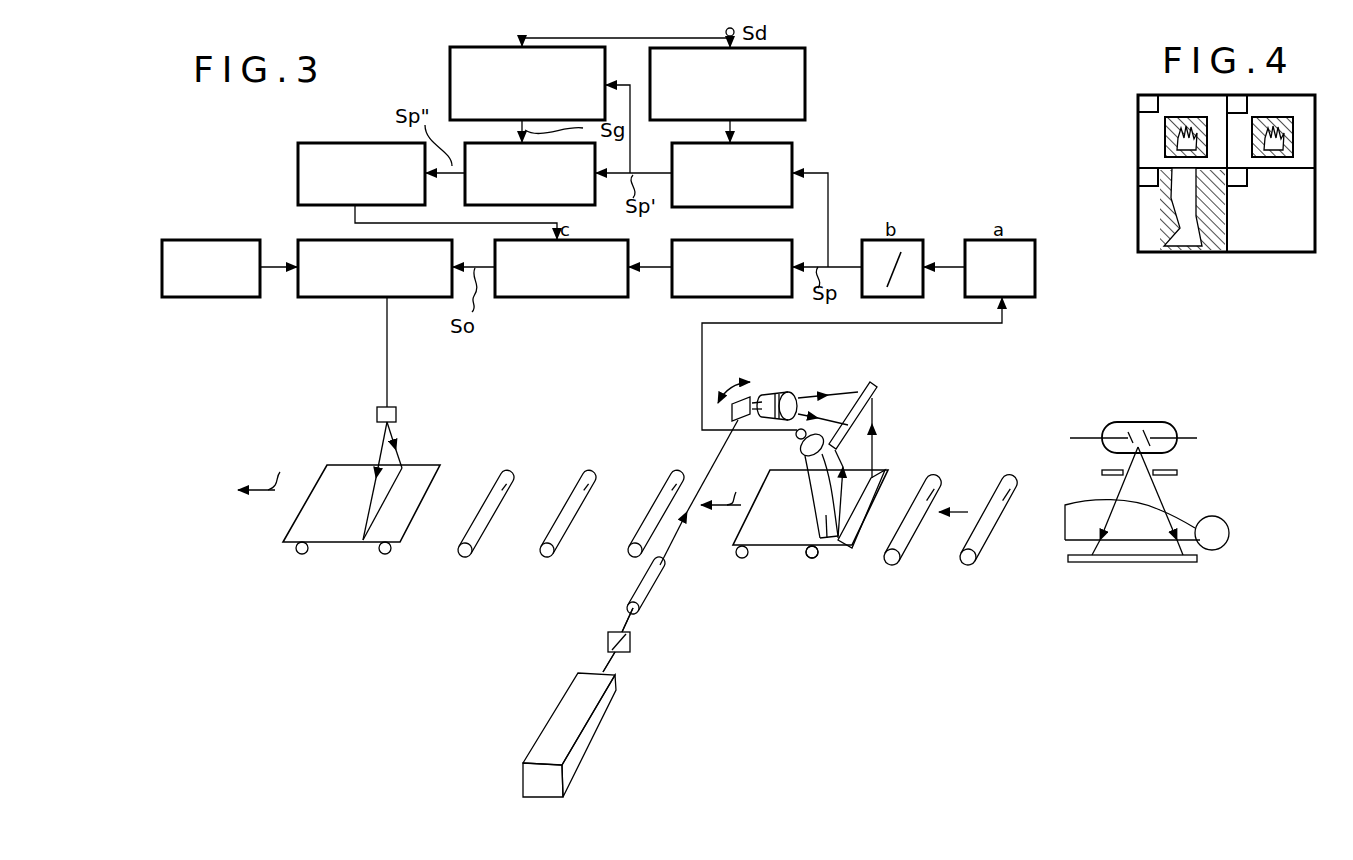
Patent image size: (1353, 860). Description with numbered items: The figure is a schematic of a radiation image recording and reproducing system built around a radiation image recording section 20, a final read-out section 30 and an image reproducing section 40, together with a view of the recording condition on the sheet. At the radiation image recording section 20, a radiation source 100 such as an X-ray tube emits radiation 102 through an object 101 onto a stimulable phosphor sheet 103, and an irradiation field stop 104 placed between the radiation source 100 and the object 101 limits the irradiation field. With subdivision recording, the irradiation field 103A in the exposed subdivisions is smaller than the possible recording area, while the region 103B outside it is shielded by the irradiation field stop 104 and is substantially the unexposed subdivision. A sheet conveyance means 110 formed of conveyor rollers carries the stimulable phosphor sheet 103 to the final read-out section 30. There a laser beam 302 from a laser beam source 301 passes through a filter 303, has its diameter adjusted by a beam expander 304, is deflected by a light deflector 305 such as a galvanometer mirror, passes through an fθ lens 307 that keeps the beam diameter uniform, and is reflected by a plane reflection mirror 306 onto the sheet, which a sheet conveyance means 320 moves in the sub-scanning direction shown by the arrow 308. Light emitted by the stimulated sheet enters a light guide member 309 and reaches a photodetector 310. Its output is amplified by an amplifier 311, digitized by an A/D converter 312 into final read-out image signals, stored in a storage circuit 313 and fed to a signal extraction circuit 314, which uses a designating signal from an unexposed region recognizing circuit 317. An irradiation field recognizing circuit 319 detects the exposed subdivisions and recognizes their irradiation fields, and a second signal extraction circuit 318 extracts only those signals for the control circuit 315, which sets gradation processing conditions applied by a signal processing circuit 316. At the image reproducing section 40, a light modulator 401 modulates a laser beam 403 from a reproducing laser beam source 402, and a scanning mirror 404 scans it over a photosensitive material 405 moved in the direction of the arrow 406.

In FIG. 3, the radiation image recording section 20 is at (1213, 568).
In FIG. 3, the final read-out section 30 is at (893, 563).
In FIG. 3, the image reproducing section 40 is at (398, 563).
In FIG. 3, the radiation source 100 is at (1140, 420).
In FIG. 3, the object 101 is at (1132, 522).
In FIG. 3, the radiation 102 is at (1115, 487).
In FIG. 3, the stimulable phosphor sheet 103 is at (883, 487).
In FIG. 4, the stimulable phosphor sheet 103 is at (1176, 173).
In FIG. 4, the irradiation field 103A is at (1165, 128).
In FIG. 4, the region outside of the irradiation field 103B is at (1143, 118).
In FIG. 3, the irradiation field stop 104 is at (1165, 472).
In FIG. 3, the sheet conveyance means 110 is at (975, 560).
In FIG. 3, the laser beam source 301 is at (590, 733).
In FIG. 3, the laser beam 302 is at (612, 660).
In FIG. 3, the filter 303 is at (630, 634).
In FIG. 3, the beam expander 304 is at (655, 593).
In FIG. 3, the light deflector 305 is at (757, 392).
In FIG. 3, the plane reflection mirror 306 is at (876, 392).
In FIG. 3, the fθ lens 307 is at (790, 392).
In FIG. 3, the arrow 308 is at (676, 546).
In FIG. 3, the light guide member 309 is at (855, 470).
In FIG. 3, the photodetector 310 is at (797, 448).
In FIG. 3, the amplifier 311 is at (1035, 266).
In FIG. 3, the A/D converter 312 is at (915, 240).
In FIG. 3, the storage circuit 313 is at (678, 297).
In FIG. 3, the signal extraction circuit 314 is at (792, 158).
In FIG. 3, the control circuit 315 is at (318, 143).
In FIG. 3, the signal processing circuit 316 is at (592, 297).
In FIG. 3, the unexposed region recognizing circuit 317 is at (805, 77).
In FIG. 3, the second signal extraction circuit 318 is at (593, 205).
In FIG. 3, the irradiation field recognizing circuit 319 is at (450, 70).
In FIG. 3, the sheet conveyance means 320 is at (818, 557).
In FIG. 3, the light modulator 401 is at (350, 297).
In FIG. 3, the reproducing laser beam source 402 is at (235, 240).
In FIG. 3, the laser beam 403 is at (278, 268).
In FIG. 3, the scanning mirror 404 is at (396, 415).
In FIG. 3, the photosensitive material 405 is at (350, 468).
In FIG. 3, the arrow 406 is at (260, 470).